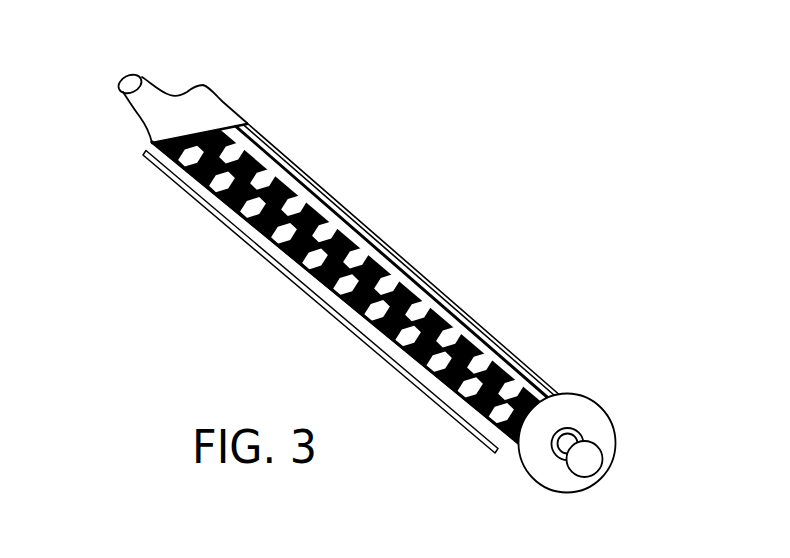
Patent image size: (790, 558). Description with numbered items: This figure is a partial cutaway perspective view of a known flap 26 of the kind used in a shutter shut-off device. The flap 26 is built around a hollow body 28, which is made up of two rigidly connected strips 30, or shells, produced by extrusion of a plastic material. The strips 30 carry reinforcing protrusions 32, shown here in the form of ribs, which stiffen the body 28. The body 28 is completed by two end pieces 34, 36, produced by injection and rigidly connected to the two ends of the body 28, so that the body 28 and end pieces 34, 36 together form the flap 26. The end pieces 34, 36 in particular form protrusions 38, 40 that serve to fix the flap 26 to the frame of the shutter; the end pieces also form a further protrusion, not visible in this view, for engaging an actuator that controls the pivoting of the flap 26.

The flap 26 is at (378, 289).
The body 28 is at (352, 301).
The strips 30 is at (227, 224).
The reinforcing protrusions 32 is at (346, 220).
The end piece 34 is at (162, 99).
The end piece 36 is at (599, 476).
The protrusion 38 is at (120, 75).
The protrusion 40 is at (588, 463).